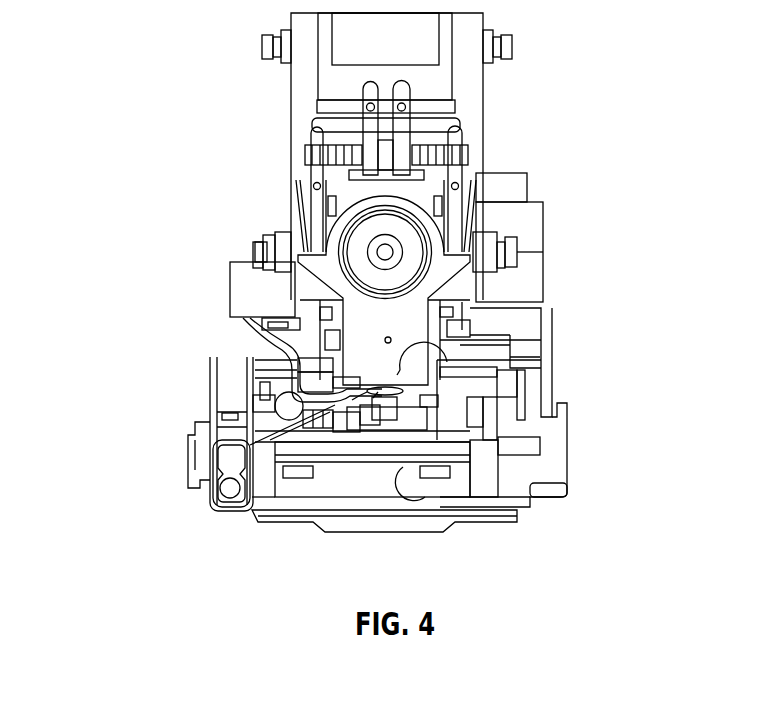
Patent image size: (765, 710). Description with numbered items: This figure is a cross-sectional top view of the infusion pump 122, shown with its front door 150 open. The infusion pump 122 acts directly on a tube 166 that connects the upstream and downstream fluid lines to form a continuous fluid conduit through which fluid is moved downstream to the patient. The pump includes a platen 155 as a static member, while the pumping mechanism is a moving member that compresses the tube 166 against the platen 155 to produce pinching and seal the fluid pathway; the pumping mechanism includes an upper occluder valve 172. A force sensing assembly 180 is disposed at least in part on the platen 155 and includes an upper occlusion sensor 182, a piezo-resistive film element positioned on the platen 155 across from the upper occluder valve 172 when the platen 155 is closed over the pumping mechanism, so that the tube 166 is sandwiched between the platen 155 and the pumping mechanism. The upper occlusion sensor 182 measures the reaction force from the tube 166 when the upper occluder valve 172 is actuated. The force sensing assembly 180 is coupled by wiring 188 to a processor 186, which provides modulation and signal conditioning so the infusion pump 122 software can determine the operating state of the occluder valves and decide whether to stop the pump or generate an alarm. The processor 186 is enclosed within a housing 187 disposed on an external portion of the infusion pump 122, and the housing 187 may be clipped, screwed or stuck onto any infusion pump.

The infusion pump 122 is at (503, 160).
The force sensing assembly 180 is at (126, 320).
The processor 186 is at (228, 302).
The housing 187 is at (228, 266).
The wiring 188 is at (243, 324).
The platen 155 is at (332, 407).
The upper occluder valve 172 is at (447, 362).
The tube 166 is at (367, 392).
The upper occlusion sensor 182 is at (373, 398).
The front door 150 is at (392, 533).